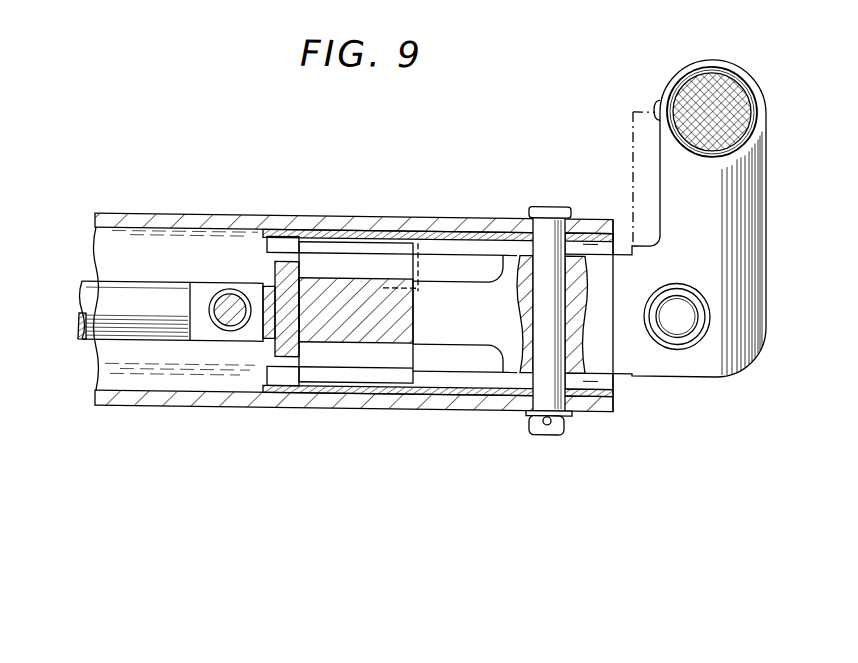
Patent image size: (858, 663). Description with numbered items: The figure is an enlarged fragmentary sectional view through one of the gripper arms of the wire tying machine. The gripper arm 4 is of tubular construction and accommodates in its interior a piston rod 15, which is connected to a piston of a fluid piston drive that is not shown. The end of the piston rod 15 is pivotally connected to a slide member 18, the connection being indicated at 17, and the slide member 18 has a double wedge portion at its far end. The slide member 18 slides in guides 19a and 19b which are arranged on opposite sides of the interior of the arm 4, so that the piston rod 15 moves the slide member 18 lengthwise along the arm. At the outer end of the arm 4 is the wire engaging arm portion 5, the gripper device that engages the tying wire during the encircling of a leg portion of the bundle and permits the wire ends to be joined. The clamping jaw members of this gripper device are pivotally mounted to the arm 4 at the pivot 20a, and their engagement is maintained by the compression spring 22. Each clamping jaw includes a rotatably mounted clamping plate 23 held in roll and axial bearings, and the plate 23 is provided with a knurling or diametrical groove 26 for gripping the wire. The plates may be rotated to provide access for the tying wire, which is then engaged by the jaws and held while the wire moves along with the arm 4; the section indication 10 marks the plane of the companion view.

The gripper arm 4 is at (239, 205).
The wire engaging arm portion 5 is at (756, 309).
The section line 10 is at (28, 248).
The piston rod 15 is at (88, 339).
The pivot hole 17 is at (222, 291).
The slide member 18 is at (320, 353).
The guide 19a is at (464, 372).
The guide 19b is at (470, 237).
The pivot 20a is at (550, 207).
The compression spring 22 is at (686, 336).
The clamping plate 23 is at (680, 72).
The knurling or diametrical groove 26 is at (750, 74).